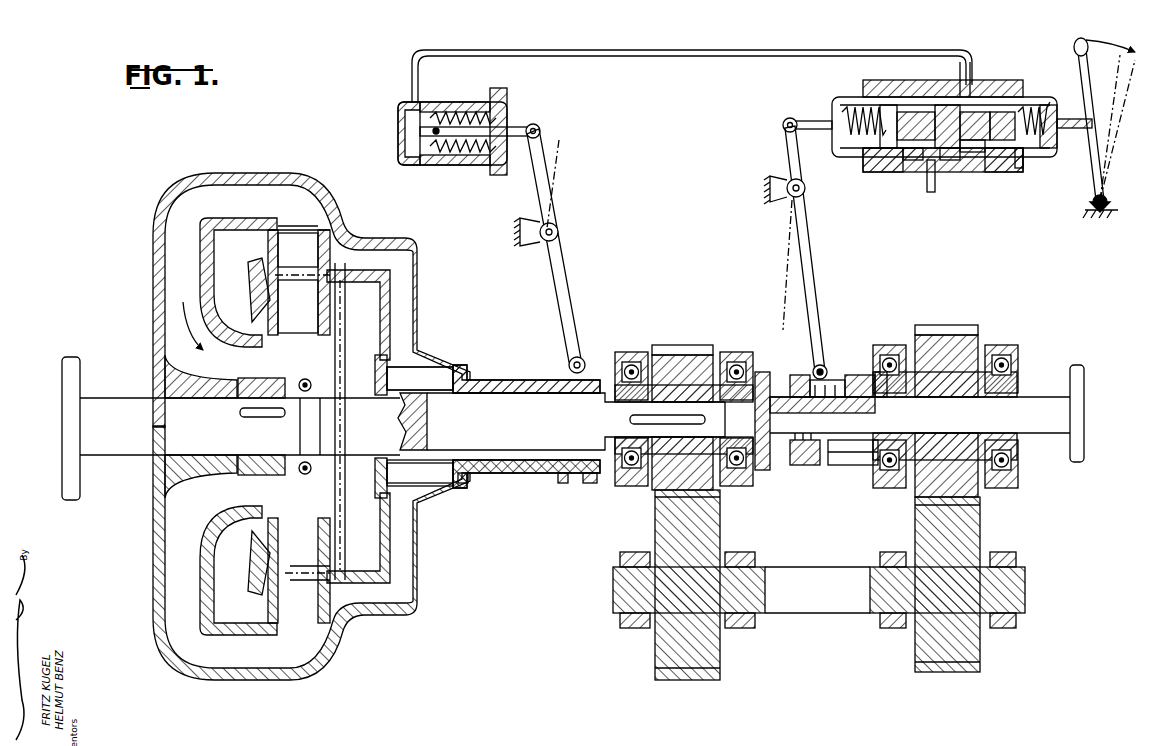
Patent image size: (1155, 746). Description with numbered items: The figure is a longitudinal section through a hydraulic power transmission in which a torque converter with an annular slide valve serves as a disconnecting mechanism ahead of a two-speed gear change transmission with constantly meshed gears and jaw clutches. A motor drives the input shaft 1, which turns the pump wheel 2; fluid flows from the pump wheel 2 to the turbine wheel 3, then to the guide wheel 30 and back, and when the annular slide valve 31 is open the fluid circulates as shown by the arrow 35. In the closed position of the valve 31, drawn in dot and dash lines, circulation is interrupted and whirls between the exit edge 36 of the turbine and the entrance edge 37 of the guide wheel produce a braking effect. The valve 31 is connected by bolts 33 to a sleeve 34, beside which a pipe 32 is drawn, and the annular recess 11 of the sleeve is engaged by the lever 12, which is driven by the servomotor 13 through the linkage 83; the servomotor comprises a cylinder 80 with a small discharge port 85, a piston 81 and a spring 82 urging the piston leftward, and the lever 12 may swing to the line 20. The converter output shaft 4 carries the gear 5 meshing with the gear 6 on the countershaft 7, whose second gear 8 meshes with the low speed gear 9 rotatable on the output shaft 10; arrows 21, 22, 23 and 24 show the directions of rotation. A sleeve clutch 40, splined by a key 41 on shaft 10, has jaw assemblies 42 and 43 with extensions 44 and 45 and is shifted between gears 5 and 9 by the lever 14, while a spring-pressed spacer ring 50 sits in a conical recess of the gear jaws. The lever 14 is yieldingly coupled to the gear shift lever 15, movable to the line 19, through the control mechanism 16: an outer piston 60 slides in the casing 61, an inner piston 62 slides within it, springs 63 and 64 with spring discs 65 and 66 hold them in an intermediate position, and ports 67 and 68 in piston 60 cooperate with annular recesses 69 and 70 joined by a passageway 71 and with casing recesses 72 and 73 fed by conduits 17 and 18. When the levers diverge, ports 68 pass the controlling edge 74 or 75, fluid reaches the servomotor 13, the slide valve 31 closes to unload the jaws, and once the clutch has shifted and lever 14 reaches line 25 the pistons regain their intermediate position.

The input shaft 1 is at (75, 422).
The pump wheel 2 is at (291, 318).
The turbine wheel 3 is at (291, 258).
The output shaft 4 is at (505, 425).
The gear 5 is at (688, 345).
The gear 6 is at (655, 522).
The countershaft 7 is at (824, 589).
The second gear 8 is at (980, 521).
The low speed gear 9 is at (972, 337).
The output shaft 10 is at (1016, 419).
The annular recess 11 is at (582, 475).
The lever 12 is at (540, 190).
The servomotor 13 is at (462, 103).
The lever 14 is at (790, 156).
The gear shift lever 15 is at (1082, 90).
The control mechanism 16 is at (862, 170).
The conduit 17 is at (928, 190).
The conduit 18 is at (688, 50).
The dot-and-dash line 19 is at (1120, 92).
The dot-and-dash line 20 is at (540, 130).
The arrow 21 is at (117, 383).
The arrow 22 is at (607, 352).
The arrow 23 is at (787, 630).
The arrow 24 is at (1050, 378).
The line 25 is at (790, 258).
The guide wheel 30 is at (155, 218).
The annular slide valve 31 is at (305, 572).
The pipe 32 is at (340, 372).
The bolts 33 is at (425, 370).
The sleeve 34 is at (508, 378).
The arrow 35 is at (200, 288).
The exit edge 36 is at (308, 237).
The entrance edge 37 is at (297, 227).
The sleeve clutch 40 is at (828, 468).
The key 41 is at (790, 410).
The jaw assembly 42 is at (865, 372).
The jaw assembly 43 is at (800, 375).
The extension 44 is at (870, 372).
The extension 45 is at (800, 378).
The spacer ring 50 is at (792, 455).
The outer piston 60 is at (1060, 135).
The casing 61 is at (1015, 165).
The inner piston 62 is at (1003, 112).
The spring 63 is at (1047, 105).
The spring 64 is at (858, 108).
The spring disc 65 is at (1030, 105).
The spring disc 66 is at (892, 105).
The ports 67 is at (927, 110).
The ports 68 is at (968, 165).
The annular recess 69 is at (895, 165).
The annular recess 70 is at (995, 165).
The passageway 71 is at (948, 105).
The annular recess 72 is at (910, 158).
The annular recess 73 is at (980, 112).
The controlling edge 74 is at (966, 56).
The controlling edge 75 is at (950, 165).
The cylinder 80 is at (460, 165).
The piston 81 is at (405, 131).
The spring 82 is at (500, 118).
The linkage 83 is at (528, 125).
The discharge port 85 is at (410, 165).